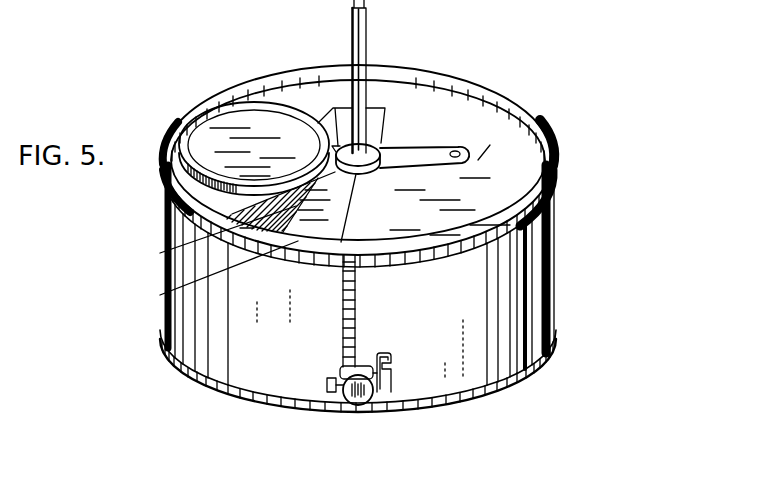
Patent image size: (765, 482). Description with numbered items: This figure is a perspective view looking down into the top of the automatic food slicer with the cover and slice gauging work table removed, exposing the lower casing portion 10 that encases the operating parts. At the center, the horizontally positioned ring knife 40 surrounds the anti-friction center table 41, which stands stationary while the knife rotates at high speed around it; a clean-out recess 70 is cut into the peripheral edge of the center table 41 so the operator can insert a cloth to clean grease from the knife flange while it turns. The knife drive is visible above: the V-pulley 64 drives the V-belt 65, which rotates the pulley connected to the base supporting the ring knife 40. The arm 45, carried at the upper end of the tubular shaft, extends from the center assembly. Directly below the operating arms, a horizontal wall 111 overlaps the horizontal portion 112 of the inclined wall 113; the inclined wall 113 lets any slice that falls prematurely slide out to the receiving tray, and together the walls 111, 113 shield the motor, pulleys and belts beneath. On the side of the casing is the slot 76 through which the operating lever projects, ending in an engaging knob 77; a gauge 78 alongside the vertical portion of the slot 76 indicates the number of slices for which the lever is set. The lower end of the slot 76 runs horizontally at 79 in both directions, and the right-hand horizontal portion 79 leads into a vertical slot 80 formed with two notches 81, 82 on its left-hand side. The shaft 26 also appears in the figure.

The lower casing portion 10 is at (555, 262).
The shaft 26 is at (365, 37).
The ring knife 40 is at (199, 107).
The anti-friction center table 41 is at (188, 128).
The arm 45 is at (540, 150).
The V-pulley 64 is at (372, 142).
The V-belt 65 is at (333, 108).
The clean-out recess 70 is at (167, 173).
The slot 76 is at (357, 315).
The engaging knob 77 is at (373, 407).
The gauge 78 is at (337, 333).
The horizontal portion 79 is at (335, 387).
The vertical slot 80 is at (389, 368).
The notch 81 is at (380, 376).
The notch 82 is at (379, 353).
The horizontal wall 111 is at (490, 145).
The horizontal portion 112 is at (165, 293).
The inclined wall 113 is at (173, 248).